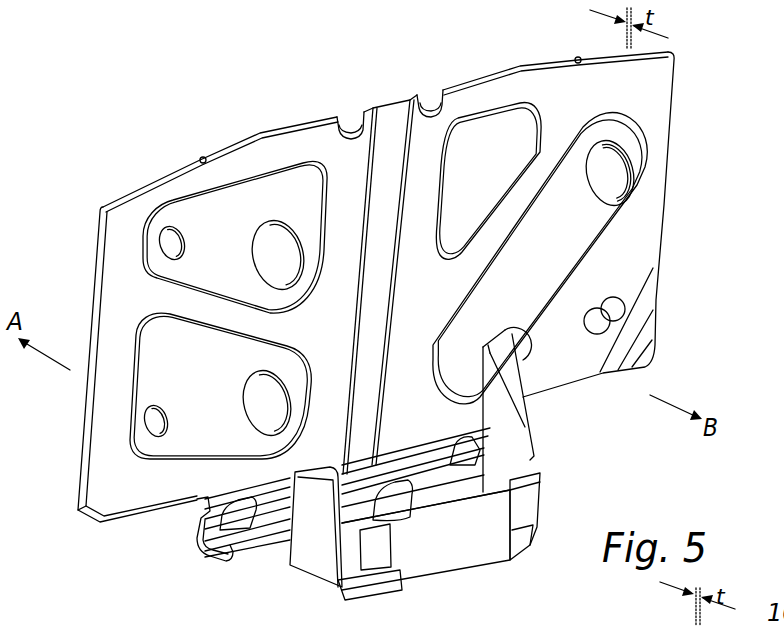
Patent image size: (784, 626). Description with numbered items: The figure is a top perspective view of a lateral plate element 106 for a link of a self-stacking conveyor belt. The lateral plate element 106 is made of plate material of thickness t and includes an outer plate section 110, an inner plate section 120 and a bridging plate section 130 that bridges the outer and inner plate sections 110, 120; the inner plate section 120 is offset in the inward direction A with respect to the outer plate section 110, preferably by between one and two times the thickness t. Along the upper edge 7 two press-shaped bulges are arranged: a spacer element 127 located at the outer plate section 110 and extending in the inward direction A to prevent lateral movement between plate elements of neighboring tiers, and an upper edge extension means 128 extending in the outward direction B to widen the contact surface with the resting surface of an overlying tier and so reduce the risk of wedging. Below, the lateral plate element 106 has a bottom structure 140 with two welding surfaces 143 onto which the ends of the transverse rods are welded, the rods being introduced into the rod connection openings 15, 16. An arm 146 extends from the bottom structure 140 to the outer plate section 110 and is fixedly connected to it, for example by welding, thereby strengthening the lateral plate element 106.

The upper edge 7 is at (500, 70).
The rod connection opening 15 is at (220, 548).
The rod connection opening 16 is at (470, 457).
The lateral plate element 106 is at (698, 85).
The outer plate section 110 is at (640, 98).
The inner plate section 120 is at (132, 222).
The spacer element 127 is at (428, 100).
The upper edge extension means 128 is at (353, 120).
The bridging plate section 130 is at (388, 118).
The bottom structure 140 is at (445, 550).
The welding surface 143 is at (314, 550).
The arm 146 is at (510, 432).